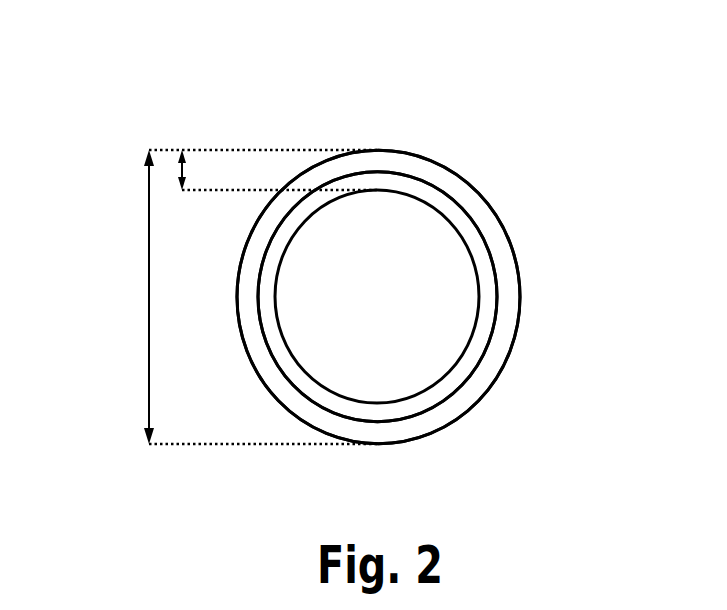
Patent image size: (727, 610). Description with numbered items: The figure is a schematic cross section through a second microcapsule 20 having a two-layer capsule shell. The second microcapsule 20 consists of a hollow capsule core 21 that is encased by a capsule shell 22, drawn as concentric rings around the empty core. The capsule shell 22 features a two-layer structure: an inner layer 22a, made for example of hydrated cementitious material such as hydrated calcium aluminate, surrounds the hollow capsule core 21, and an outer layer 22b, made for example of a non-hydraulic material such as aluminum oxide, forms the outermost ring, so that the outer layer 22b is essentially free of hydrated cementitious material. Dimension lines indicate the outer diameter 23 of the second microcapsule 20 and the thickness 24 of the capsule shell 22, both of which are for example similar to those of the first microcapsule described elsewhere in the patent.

The second microcapsule 20 is at (524, 187).
The hollow capsule core 21 is at (402, 349).
The capsule shell 22 is at (524, 272).
The inner layer 22a is at (415, 188).
The outer layer 22b is at (438, 173).
The outer diameter 23 is at (148, 243).
The thickness 24 is at (185, 170).